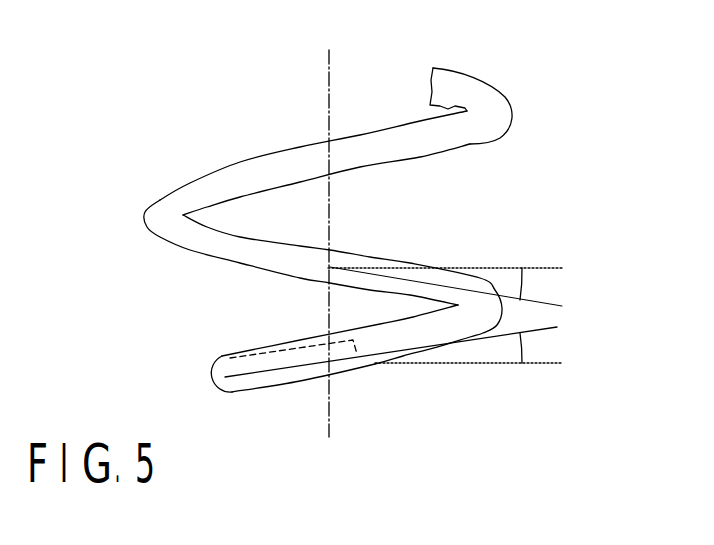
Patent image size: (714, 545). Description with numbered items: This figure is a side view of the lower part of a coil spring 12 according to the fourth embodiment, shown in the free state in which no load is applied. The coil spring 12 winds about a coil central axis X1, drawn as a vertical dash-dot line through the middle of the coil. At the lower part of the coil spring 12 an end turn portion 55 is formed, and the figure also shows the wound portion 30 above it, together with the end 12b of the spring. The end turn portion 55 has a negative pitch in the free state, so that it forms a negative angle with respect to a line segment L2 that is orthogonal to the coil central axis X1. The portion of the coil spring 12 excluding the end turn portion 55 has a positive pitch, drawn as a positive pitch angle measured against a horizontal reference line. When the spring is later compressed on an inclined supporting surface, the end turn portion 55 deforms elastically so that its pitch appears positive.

The coil spring 12 is at (369, 245).
The coil portion 30 is at (426, 145).
The end portion of coil spring 12b is at (352, 368).
The end turn portion 55 is at (340, 385).
The coil central axis X1 is at (331, 216).
The line segment L2 is at (475, 364).